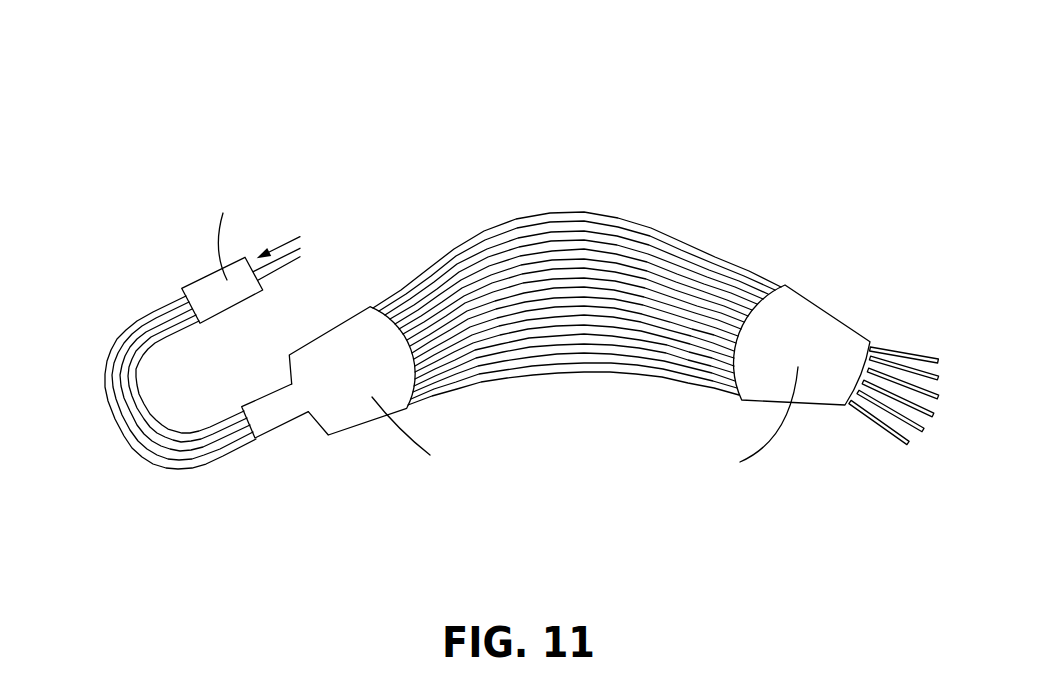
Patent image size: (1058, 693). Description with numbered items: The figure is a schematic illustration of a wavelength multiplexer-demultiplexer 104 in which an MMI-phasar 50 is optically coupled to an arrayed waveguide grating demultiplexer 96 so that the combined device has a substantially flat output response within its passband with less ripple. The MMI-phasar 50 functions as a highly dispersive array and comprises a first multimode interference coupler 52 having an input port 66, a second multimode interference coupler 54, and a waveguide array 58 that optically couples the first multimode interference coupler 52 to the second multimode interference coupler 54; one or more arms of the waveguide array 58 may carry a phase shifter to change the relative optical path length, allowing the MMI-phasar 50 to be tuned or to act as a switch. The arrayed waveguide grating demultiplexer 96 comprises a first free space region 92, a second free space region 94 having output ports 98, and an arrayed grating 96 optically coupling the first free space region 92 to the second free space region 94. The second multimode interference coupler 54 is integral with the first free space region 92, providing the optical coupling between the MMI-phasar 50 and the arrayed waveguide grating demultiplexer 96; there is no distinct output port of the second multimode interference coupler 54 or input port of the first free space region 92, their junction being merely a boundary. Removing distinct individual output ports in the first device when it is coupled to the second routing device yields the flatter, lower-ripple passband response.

The MMI-phasar 50 is at (199, 518).
The first multimode interference (MMI) coupler 52 is at (200, 293).
The second multimode interference coupler 54 is at (280, 430).
The waveguide array 58 is at (137, 440).
The input port 66 is at (280, 268).
The first free space region 92 is at (348, 417).
The second free space region 94 is at (827, 310).
The arrayed grating 96 is at (767, 227).
The output ports 98 is at (880, 430).
The wavelength multiplexer-demultiplexer 104 is at (480, 114).